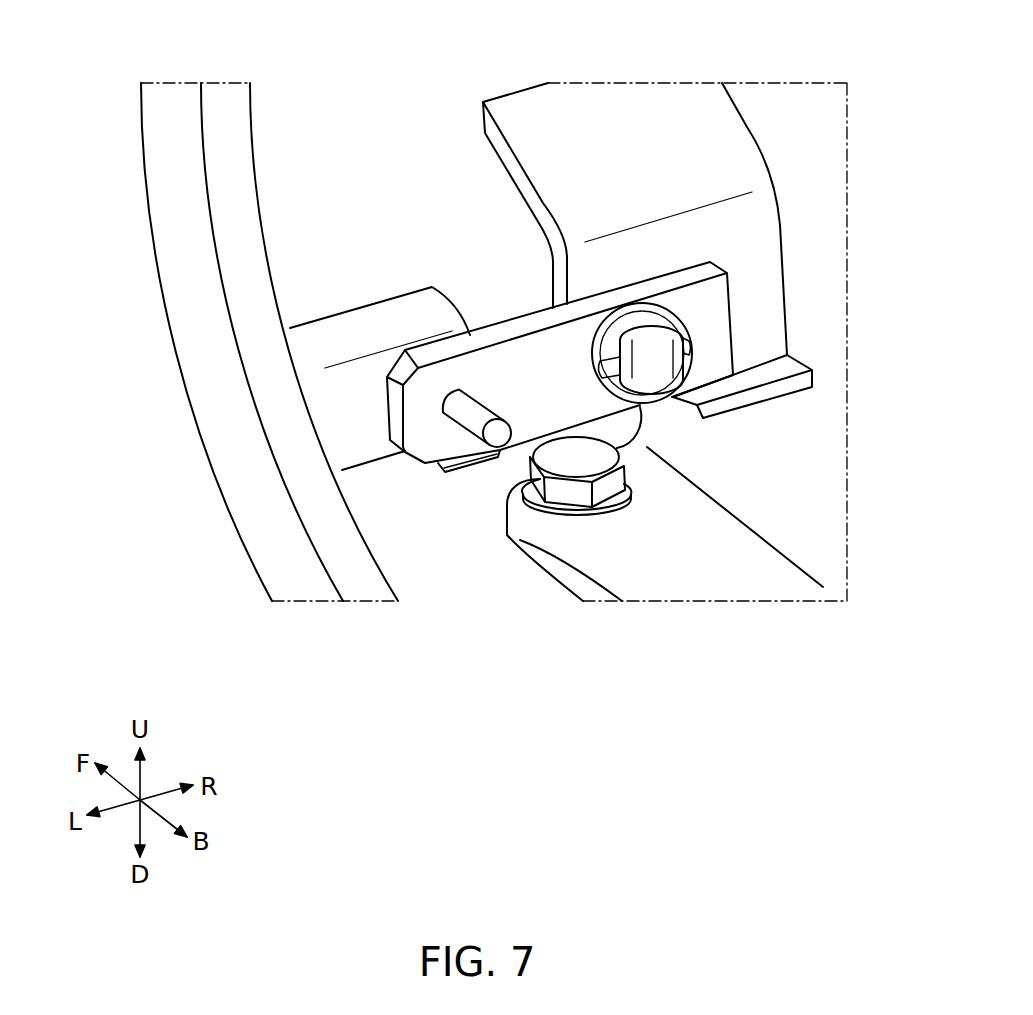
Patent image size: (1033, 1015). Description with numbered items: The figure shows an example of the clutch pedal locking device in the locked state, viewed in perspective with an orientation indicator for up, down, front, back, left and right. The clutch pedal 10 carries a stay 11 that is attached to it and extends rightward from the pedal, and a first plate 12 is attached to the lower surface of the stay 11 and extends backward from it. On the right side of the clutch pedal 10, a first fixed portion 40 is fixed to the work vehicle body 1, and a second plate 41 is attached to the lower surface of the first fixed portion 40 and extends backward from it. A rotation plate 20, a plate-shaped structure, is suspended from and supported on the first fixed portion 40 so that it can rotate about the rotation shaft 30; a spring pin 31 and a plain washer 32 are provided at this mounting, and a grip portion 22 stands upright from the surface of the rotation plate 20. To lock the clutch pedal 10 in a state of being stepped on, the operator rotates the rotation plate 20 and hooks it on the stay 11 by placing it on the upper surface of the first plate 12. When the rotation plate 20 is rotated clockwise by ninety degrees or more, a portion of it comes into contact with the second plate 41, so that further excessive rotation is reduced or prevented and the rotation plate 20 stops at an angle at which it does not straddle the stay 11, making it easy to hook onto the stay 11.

The work vehicle body 1 is at (817, 312).
The clutch pedal 10 is at (200, 310).
The stay 11 is at (373, 327).
The first plate 12 is at (462, 468).
The rotation plate 20 is at (518, 380).
The grip portion 22 is at (467, 417).
The rotation shaft 30 is at (652, 352).
The spring pin 31 is at (600, 350).
The plain washer 32 is at (673, 335).
The first fixed portion 40 is at (780, 220).
The second plate 41 is at (767, 393).